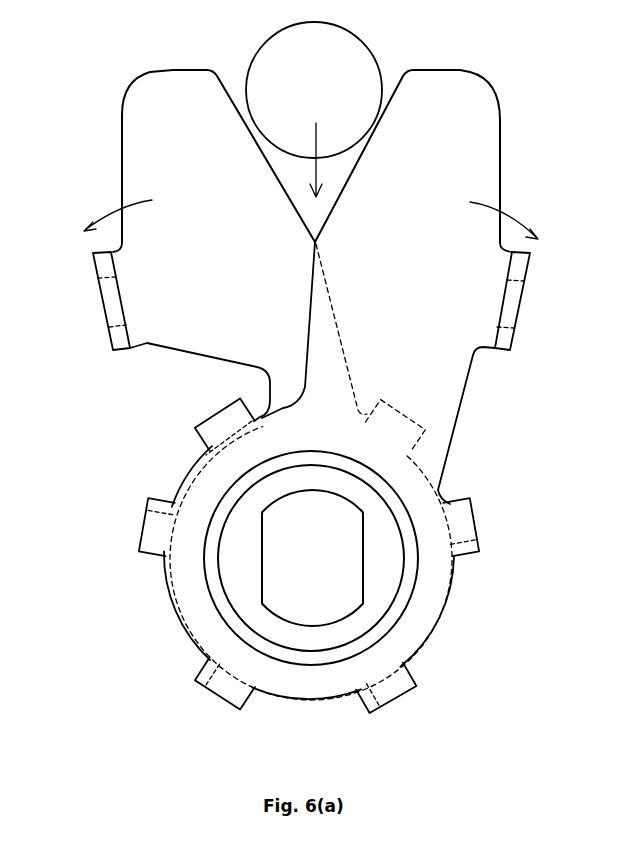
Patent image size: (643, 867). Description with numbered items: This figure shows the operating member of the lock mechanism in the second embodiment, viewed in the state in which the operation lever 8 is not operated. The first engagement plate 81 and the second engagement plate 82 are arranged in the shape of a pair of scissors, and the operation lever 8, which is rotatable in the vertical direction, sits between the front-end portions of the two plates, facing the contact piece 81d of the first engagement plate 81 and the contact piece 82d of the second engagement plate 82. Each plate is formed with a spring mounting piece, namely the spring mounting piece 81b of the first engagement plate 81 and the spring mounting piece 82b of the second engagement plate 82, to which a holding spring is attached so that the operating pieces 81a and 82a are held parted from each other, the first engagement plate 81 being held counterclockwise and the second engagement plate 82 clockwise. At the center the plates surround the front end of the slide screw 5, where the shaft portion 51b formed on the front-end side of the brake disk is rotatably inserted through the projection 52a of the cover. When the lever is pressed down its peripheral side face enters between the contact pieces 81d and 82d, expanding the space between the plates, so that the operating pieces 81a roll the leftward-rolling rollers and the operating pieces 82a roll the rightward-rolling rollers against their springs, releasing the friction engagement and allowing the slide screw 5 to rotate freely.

The operation lever 8 is at (345, 37).
The contact piece 82d is at (223, 82).
The contact piece 81d is at (400, 90).
The spring mounting piece 82b is at (103, 298).
The spring mounting piece 81b is at (517, 302).
The second engagement plate 82 is at (187, 337).
The first engagement plate 81 is at (452, 372).
The operating piece 81a is at (215, 430).
The operating piece 82a is at (150, 538).
The shaft portion 51b is at (390, 582).
The projection 52a is at (398, 612).
The screw 5 is at (318, 600).